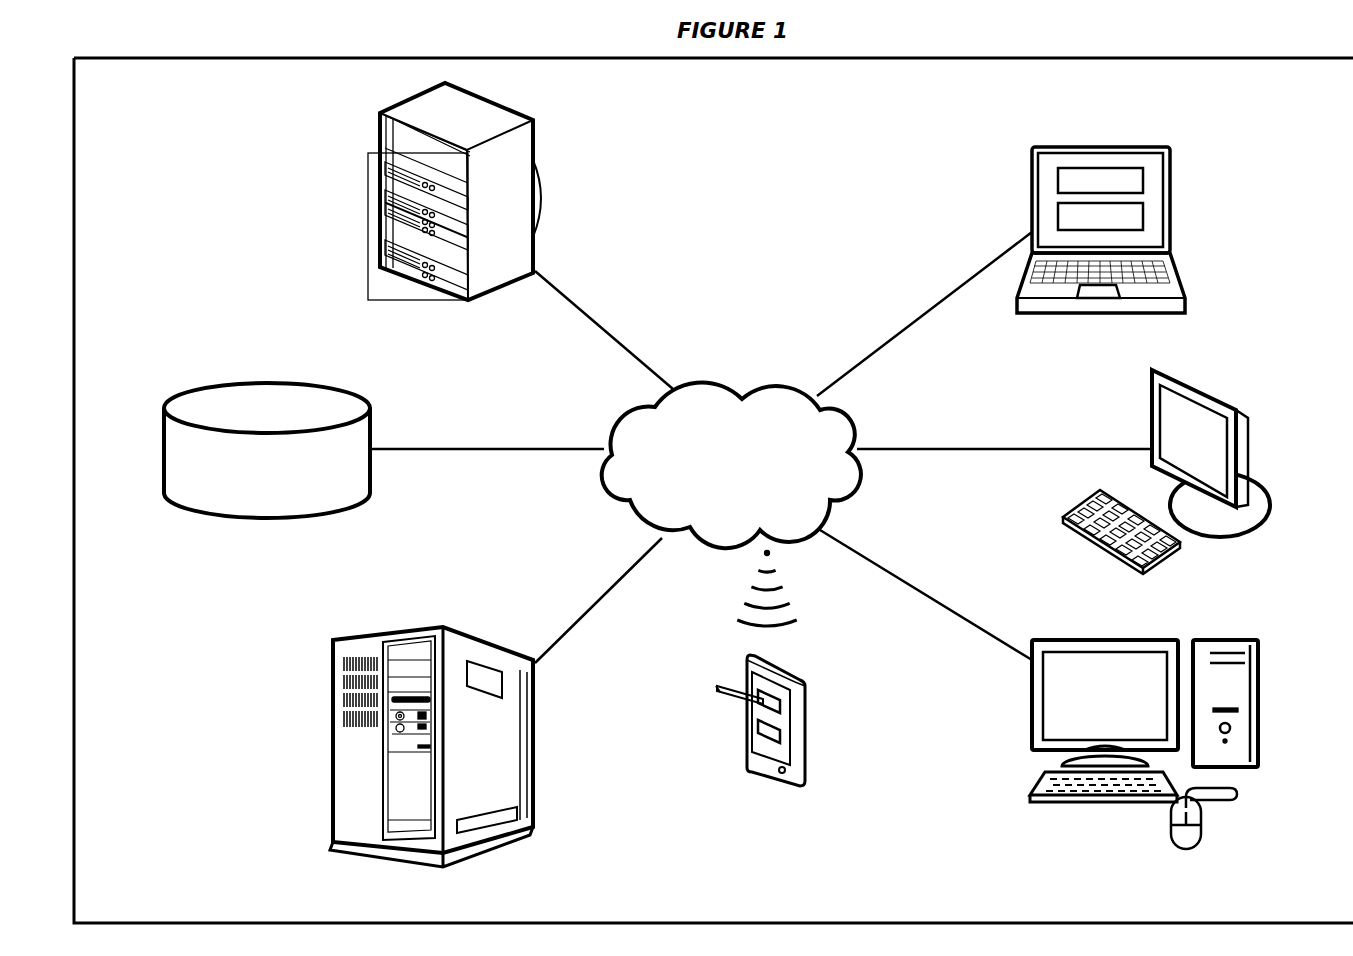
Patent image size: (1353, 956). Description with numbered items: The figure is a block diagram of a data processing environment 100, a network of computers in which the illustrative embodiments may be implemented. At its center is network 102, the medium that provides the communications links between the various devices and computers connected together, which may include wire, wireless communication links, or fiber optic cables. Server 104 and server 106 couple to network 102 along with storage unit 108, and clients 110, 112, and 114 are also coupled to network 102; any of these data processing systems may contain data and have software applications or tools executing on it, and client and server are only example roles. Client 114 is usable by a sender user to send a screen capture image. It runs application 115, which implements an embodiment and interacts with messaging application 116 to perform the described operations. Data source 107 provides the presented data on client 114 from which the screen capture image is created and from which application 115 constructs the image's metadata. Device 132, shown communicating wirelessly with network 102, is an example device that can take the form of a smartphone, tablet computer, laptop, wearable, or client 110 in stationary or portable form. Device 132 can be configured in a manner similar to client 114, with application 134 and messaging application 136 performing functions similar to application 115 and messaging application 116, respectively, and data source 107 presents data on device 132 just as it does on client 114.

The data processing environment 100 is at (123, 98).
The network 102 is at (747, 484).
The server 104 is at (482, 327).
The server 106 is at (509, 759).
The data source 107 is at (503, 686).
The storage unit 108 is at (282, 490).
The client 110 is at (1293, 561).
The client 112 is at (1155, 698).
The client 114 is at (1102, 240).
The application 115 is at (1058, 178).
The messaging application 116 is at (1143, 222).
The device 132 is at (774, 686).
The application 134 is at (780, 700).
The messaging application 136 is at (687, 751).